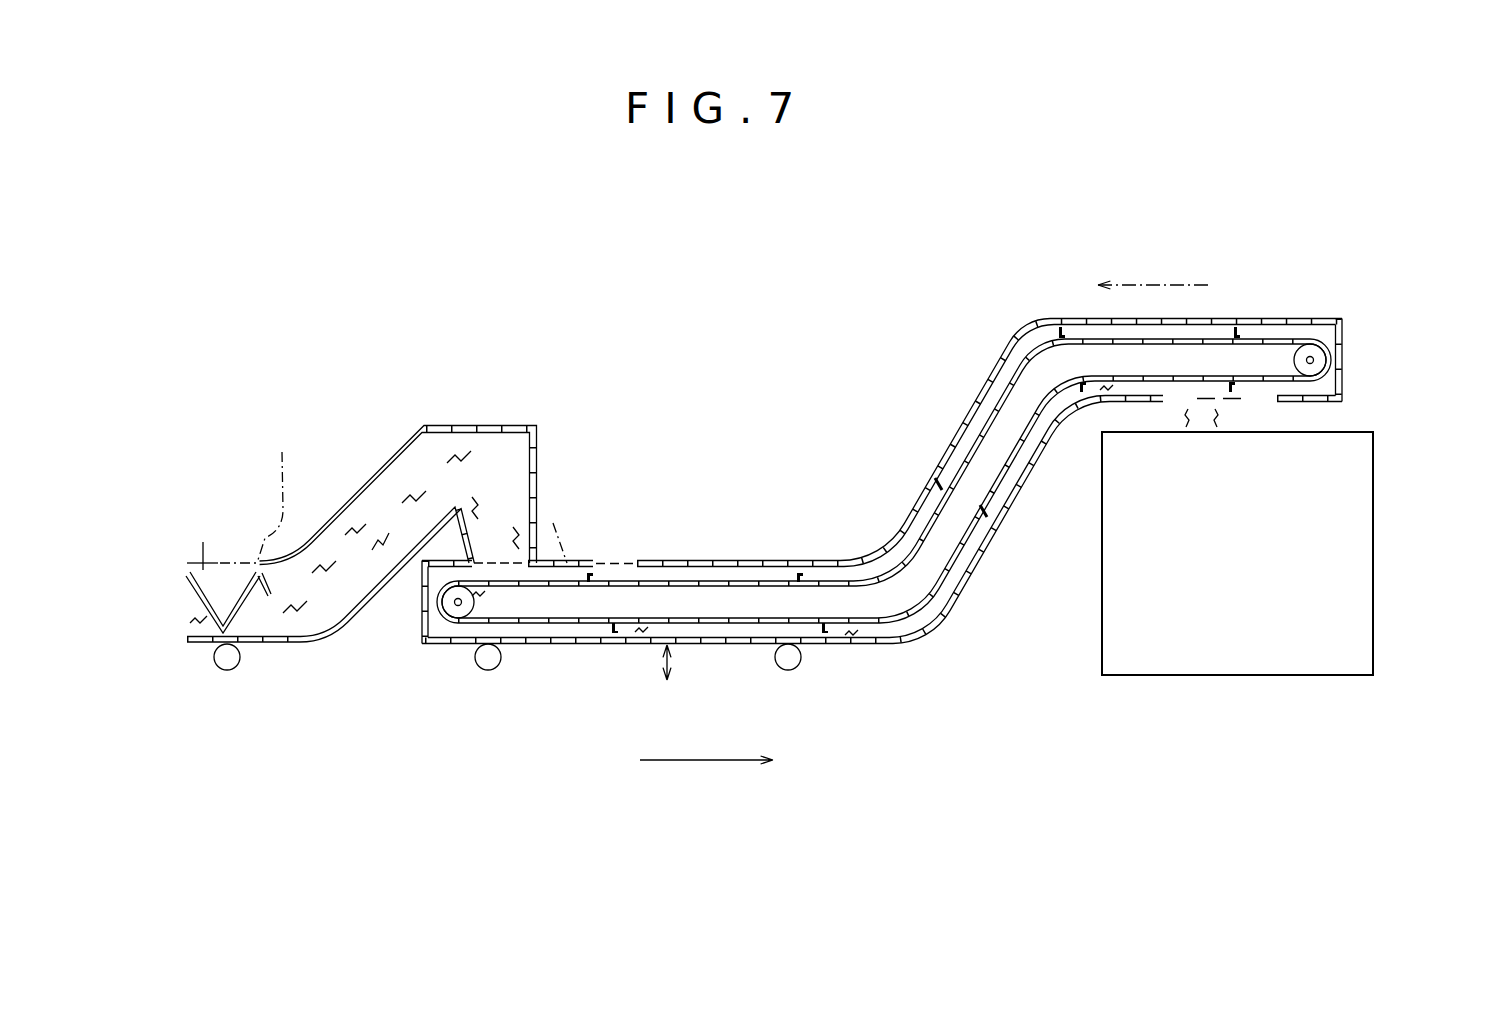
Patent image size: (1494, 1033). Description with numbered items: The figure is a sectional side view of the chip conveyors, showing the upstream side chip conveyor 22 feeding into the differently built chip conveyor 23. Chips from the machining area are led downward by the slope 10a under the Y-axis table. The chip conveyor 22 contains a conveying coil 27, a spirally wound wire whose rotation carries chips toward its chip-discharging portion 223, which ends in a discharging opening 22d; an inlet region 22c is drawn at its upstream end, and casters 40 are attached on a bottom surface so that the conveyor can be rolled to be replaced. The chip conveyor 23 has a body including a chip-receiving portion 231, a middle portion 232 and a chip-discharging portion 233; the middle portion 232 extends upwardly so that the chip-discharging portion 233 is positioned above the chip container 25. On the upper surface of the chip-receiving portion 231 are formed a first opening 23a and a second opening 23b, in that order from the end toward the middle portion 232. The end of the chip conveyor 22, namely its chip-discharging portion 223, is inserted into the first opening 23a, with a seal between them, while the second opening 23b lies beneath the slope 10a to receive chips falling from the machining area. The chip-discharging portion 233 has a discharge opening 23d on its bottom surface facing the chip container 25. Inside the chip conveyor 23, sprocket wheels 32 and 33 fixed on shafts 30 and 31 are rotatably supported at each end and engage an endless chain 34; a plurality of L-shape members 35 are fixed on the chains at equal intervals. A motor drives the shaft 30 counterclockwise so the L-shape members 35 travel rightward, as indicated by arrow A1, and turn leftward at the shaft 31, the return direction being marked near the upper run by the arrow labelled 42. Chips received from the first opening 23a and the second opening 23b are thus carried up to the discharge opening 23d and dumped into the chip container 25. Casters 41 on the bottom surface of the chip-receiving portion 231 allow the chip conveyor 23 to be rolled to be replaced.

The chip conveyor 22 is at (368, 443).
The chip-discharging portion 223 is at (424, 425).
The chute inlet 22c is at (224, 543).
The discharging opening 22d is at (497, 522).
The conveying coil 27 is at (284, 491).
The slope 10a is at (663, 560).
The chip conveyor 23 is at (958, 455).
The chip-receiving portion 231 is at (713, 560).
The middle portion 232 is at (1018, 330).
The chip-discharging portion 233 is at (1227, 317).
The first opening 23a is at (517, 582).
The second opening 23b is at (620, 542).
The discharge opening 23d is at (1250, 407).
The shaft 30 is at (903, 514).
The shaft 31 is at (1314, 360).
The sprocket wheel 32 is at (433, 612).
The sprocket wheel 33 is at (1320, 322).
The endless chain 34 is at (738, 622).
The L-shape member 35 is at (803, 562).
The casters 40 is at (230, 670).
The casters 41 is at (493, 670).
The sheet conveying direction 42 is at (1167, 283).
The arrow A1 is at (692, 762).
The chip container 25 is at (1265, 663).